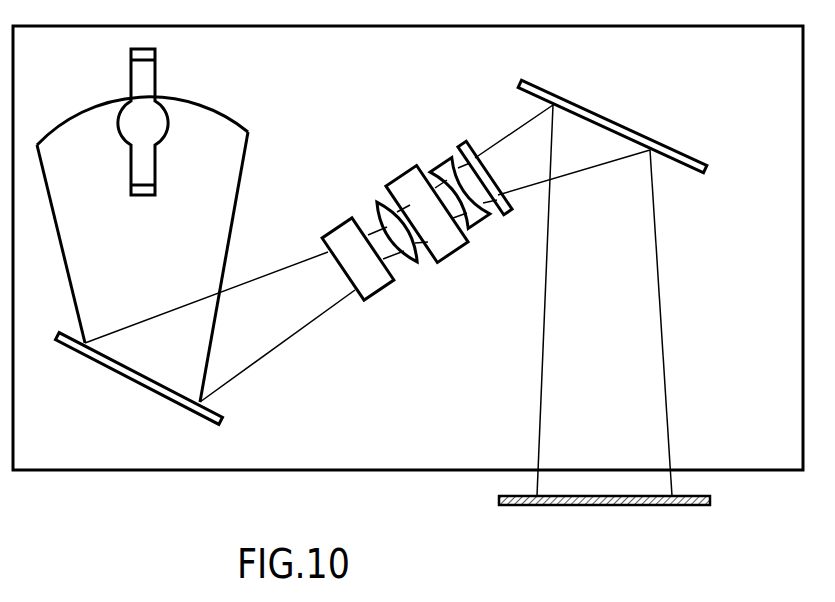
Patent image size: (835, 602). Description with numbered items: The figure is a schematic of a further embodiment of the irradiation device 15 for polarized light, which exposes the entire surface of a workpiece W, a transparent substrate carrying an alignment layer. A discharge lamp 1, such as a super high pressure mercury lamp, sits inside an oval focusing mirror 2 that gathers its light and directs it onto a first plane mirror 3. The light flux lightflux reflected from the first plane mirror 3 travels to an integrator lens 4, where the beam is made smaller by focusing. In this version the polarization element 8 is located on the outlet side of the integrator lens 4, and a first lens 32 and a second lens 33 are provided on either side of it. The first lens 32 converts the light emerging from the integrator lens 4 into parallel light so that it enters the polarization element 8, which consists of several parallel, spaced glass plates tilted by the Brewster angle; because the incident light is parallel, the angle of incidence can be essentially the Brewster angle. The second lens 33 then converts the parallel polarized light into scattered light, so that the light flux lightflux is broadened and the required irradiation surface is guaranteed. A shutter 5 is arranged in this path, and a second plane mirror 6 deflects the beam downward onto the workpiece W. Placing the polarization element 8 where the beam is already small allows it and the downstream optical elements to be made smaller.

The discharge lamp 1 is at (155, 75).
The oval focusing mirror 2 is at (245, 132).
The first plane mirror 3 is at (122, 375).
The integrator lens 4 is at (340, 230).
The shutter 5 is at (465, 145).
The second plane mirror 6 is at (635, 128).
The polarization element 8 is at (453, 257).
The irradiation device for polarized light 15 is at (60, 470).
The first lens 32 is at (382, 208).
The second lens 33 is at (477, 223).
The workpiece W is at (702, 494).
The light flux lightflux is at (263, 358).